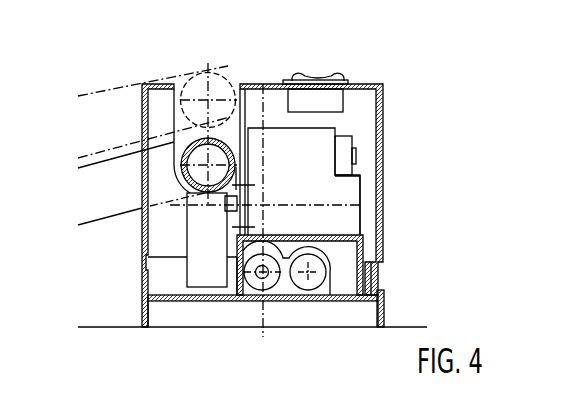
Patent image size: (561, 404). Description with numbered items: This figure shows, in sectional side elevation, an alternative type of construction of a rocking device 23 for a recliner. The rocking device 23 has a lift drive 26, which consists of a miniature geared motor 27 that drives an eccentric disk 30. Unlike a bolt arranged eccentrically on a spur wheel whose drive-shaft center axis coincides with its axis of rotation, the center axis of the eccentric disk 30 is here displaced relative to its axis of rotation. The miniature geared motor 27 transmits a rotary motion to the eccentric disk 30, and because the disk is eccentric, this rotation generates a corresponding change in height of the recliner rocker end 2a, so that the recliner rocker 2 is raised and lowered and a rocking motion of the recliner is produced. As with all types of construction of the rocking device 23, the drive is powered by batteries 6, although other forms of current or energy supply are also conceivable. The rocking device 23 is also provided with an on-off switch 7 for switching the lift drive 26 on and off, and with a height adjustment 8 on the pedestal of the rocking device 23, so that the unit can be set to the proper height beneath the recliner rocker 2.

The recliner rocker 2 is at (108, 200).
The recliner rocker end 2a is at (217, 157).
The batteries 6 is at (315, 278).
The on-off switch 7 is at (314, 80).
The height adjustment 8 is at (382, 297).
The rocking device 23 is at (378, 83).
The lift drive 26 is at (364, 181).
The miniature geared motor 27 is at (343, 222).
The eccentric disk 30 is at (200, 267).